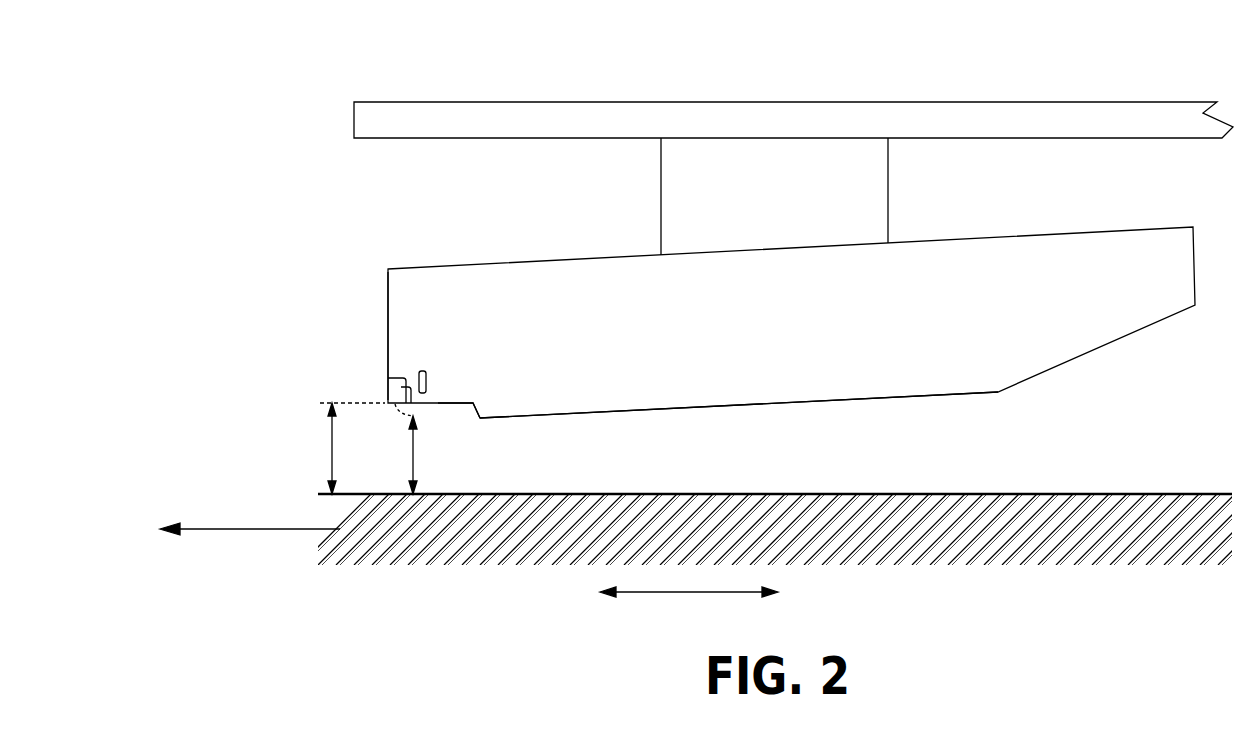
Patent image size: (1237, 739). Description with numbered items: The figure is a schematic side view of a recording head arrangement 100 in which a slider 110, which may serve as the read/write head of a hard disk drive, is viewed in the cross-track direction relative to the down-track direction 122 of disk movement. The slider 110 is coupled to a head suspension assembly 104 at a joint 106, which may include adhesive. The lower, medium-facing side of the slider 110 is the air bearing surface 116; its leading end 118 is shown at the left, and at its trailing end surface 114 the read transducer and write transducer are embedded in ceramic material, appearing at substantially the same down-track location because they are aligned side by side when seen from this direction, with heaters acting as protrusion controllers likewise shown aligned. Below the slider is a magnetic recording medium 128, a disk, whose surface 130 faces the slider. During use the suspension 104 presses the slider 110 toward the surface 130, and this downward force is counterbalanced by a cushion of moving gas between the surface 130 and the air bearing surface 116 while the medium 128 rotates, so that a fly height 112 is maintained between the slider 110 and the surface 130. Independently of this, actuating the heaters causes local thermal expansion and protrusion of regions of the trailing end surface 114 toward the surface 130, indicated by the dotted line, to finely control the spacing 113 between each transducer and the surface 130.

The recording head arrangement 100 is at (303, 127).
The head suspension assembly 104 is at (1137, 115).
The joint 106 is at (888, 191).
The slider 110 is at (1066, 252).
The leading edge of slider 118 is at (387, 280).
The air bearing surface 116 is at (651, 405).
The trailing end surface 114 is at (453, 404).
The fly height 112 is at (341, 448).
The spacing 113 is at (397, 455).
The down-track direction 122 is at (689, 603).
The magnetic recording medium 128 is at (1085, 545).
The surface 130 is at (1087, 494).